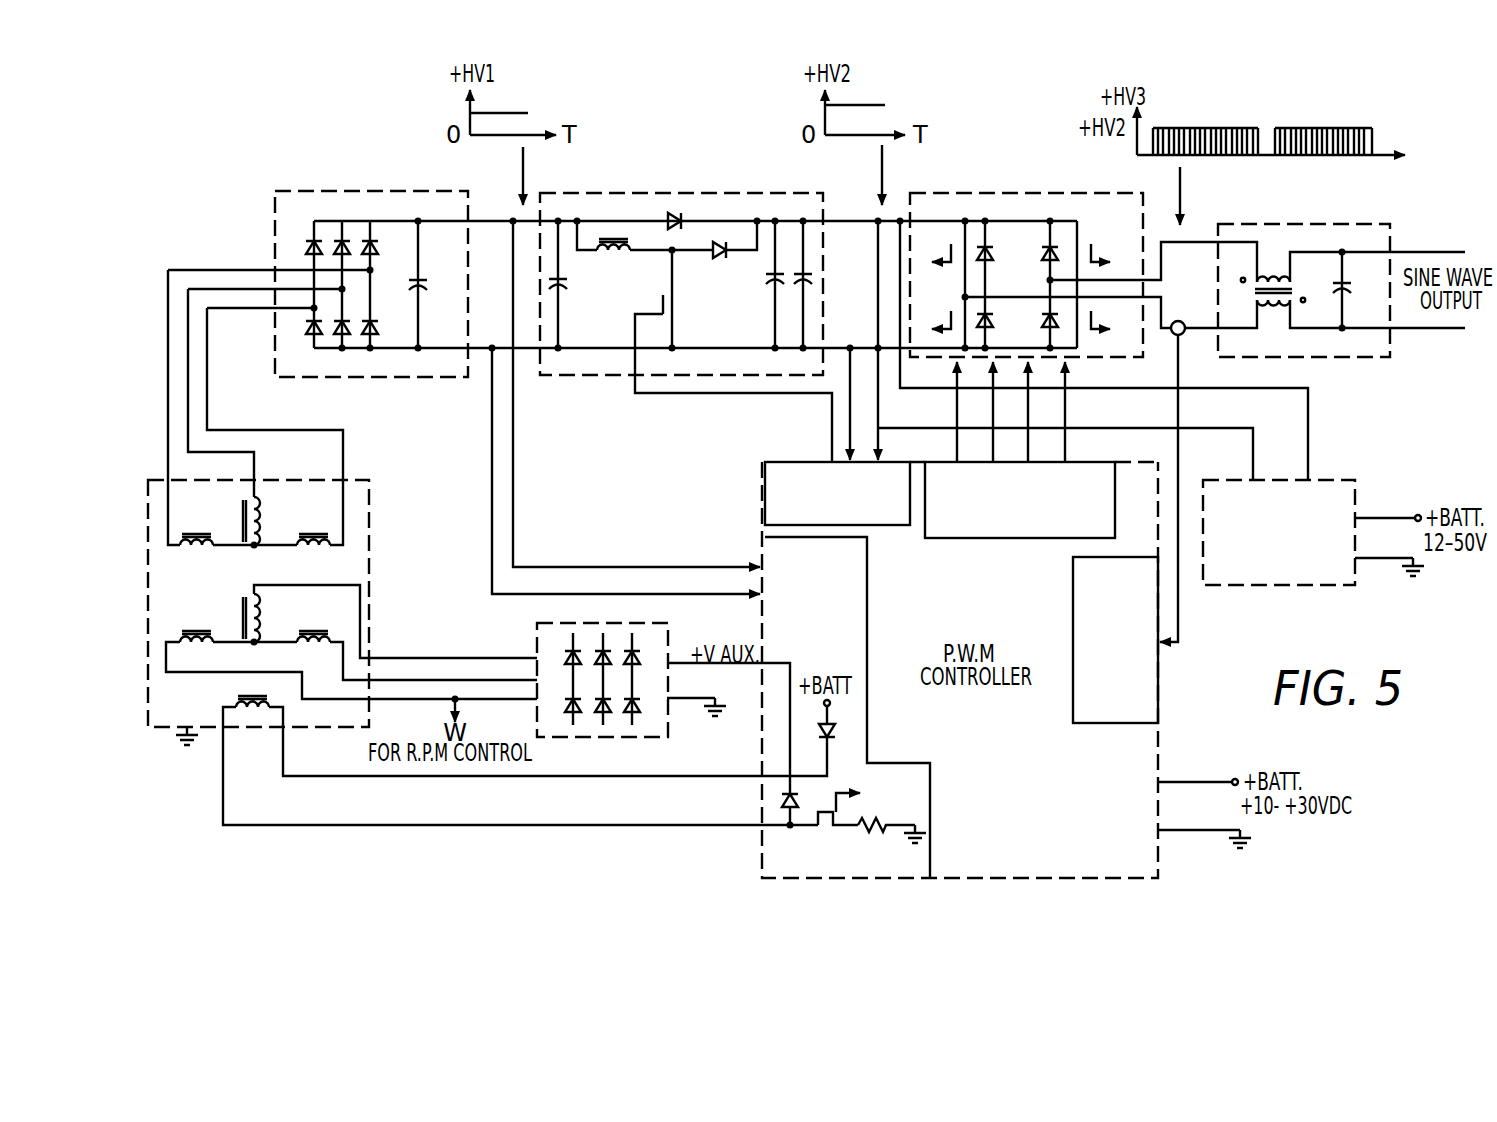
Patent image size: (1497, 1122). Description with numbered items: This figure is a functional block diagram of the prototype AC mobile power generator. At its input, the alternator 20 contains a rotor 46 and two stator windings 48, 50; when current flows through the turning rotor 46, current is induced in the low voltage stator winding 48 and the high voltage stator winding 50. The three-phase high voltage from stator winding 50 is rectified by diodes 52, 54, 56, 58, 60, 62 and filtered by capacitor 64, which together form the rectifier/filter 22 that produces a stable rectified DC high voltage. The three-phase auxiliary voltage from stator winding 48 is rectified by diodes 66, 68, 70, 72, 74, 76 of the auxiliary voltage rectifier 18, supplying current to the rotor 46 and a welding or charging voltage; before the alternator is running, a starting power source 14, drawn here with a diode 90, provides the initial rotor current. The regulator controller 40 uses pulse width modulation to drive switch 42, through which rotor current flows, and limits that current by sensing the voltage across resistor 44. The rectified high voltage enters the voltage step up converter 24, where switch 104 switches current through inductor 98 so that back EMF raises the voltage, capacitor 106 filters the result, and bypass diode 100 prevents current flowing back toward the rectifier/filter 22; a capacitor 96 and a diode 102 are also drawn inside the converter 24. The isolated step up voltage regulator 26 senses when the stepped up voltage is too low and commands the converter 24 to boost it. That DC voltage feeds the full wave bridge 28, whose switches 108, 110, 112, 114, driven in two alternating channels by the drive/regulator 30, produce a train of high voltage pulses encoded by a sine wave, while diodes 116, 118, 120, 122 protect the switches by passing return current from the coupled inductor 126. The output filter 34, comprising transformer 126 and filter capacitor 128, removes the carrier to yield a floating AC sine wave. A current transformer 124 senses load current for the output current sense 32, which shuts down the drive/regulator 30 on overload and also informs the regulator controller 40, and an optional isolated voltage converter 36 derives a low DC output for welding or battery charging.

The starting power source 14 is at (824, 731).
The auxiliary voltage rectifier 18 is at (669, 652).
The alternator 20 is at (152, 487).
The rectifier/filter 22 is at (383, 190).
The voltage step up converter 24 is at (808, 197).
The isolated step up voltage regulator 26 is at (765, 505).
The full wave bridge 28 is at (1076, 196).
The drive/regulator 30 is at (1105, 513).
The output current sense 32 is at (1100, 724).
The output filter 34 is at (1375, 224).
The isolated voltage converter 36 is at (1328, 480).
The regulator controller 40 is at (925, 801).
The switch 42 is at (825, 829).
The resistor 44 is at (883, 829).
The rotor 46 is at (242, 690).
The stator winding 48 is at (258, 629).
The stator winding 50 is at (262, 522).
The diode 52 is at (311, 241).
The diode 54 is at (343, 240).
The diode 56 is at (379, 249).
The diode 58 is at (311, 331).
The diode 60 is at (346, 340).
The diode 62 is at (378, 320).
The capacitor 64 is at (429, 285).
The diode 66 is at (568, 660).
The diode 68 is at (598, 660).
The diode 70 is at (640, 660).
The diode 72 is at (566, 711).
The diode 74 is at (601, 716).
The diode 76 is at (637, 708).
The diode 90 is at (798, 799).
The capacitor 96 is at (570, 285).
The inductor 98 is at (604, 255).
The bypass diode 100 is at (680, 212).
The diode 102 is at (722, 260).
The switch 104 is at (680, 304).
The capacitor 106 is at (806, 290).
The switch 108 is at (950, 269).
The switch 110 is at (952, 318).
The switch 112 is at (1090, 257).
The switch 114 is at (1086, 346).
The diode 116 is at (998, 272).
The diode 118 is at (988, 327).
The diode 120 is at (1045, 257).
The diode 122 is at (1046, 326).
The current transformer 124 is at (1184, 320).
The transformer 126 is at (1278, 312).
The filter capacitor 128 is at (1355, 292).